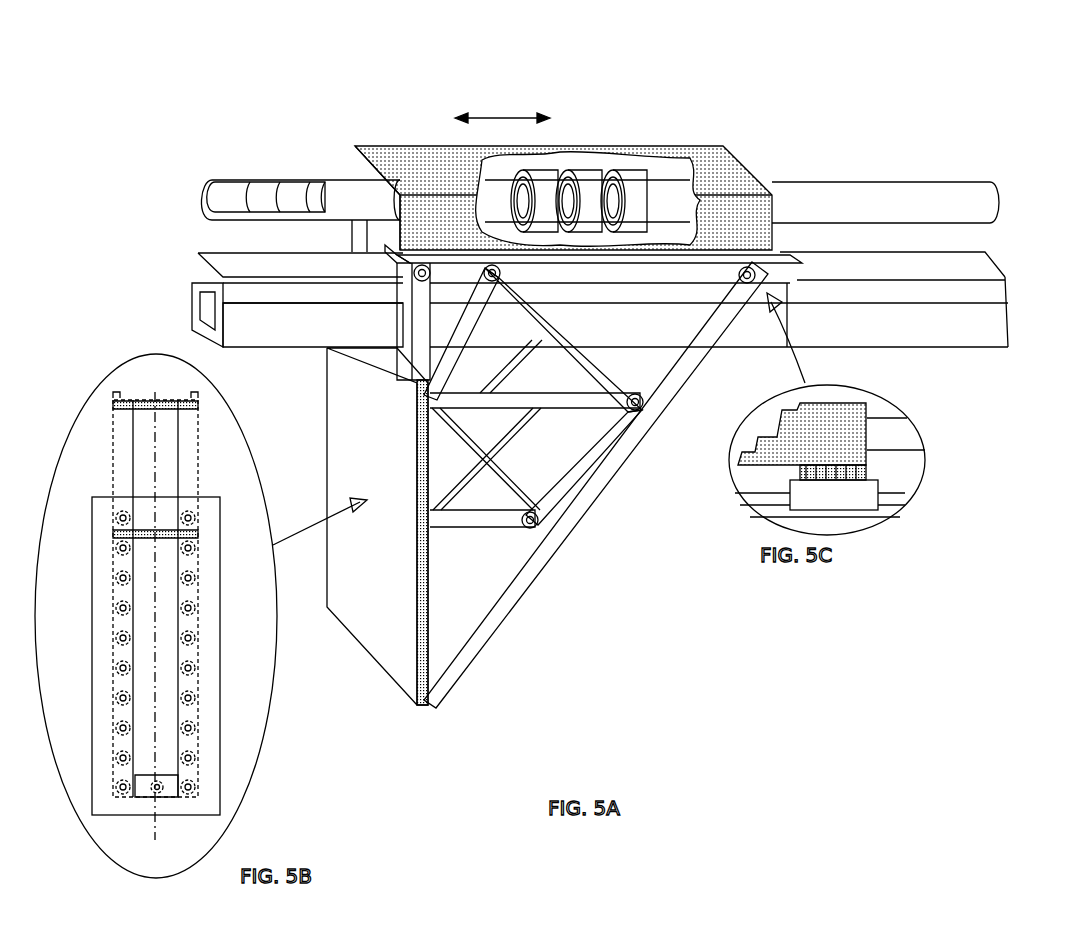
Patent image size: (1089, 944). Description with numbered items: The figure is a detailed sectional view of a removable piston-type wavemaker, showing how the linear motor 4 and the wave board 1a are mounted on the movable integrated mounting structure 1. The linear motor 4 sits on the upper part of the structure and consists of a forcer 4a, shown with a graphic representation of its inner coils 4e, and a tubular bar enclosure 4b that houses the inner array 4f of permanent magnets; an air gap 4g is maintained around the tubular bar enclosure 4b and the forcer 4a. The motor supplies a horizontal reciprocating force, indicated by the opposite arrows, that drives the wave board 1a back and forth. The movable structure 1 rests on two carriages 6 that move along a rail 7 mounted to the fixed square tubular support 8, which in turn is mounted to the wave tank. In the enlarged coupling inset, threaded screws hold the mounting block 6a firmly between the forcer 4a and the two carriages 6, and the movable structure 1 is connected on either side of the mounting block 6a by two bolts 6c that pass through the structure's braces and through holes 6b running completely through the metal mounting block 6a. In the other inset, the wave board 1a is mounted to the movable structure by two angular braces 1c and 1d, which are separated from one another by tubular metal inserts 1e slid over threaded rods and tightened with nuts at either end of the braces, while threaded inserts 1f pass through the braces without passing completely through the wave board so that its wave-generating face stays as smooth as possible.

In FIG. 5A, the movable integrated mounting structure 1 is at (582, 490).
In FIG. 5A, the wave board 1a is at (372, 620).
In FIG. 5B, the angular brace 1c is at (120, 466).
In FIG. 5B, the angular brace 1d is at (190, 466).
In FIG. 5B, the tubular metal inserts 1e is at (190, 410).
In FIG. 5B, the threaded inserts 1f is at (118, 518).
In FIG. 5A, the linear motor 4 is at (678, 117).
In FIG. 5A, the forcer 4a is at (442, 190).
In FIG. 5C, the forcer 4a is at (845, 428).
In FIG. 5A, the tubular bar enclosure 4b is at (343, 190).
In FIG. 5A, the inner coils 4e is at (550, 192).
In FIG. 5A, the inner array of permanent magnets 4f is at (284, 182).
In FIG. 5A, the air gap 4g is at (386, 196).
In FIG. 5A, the carriages 6 is at (527, 290).
In FIG. 5C, the carriages 6 is at (835, 495).
In FIG. 5C, the mounting block 6a is at (868, 478).
In FIG. 5C, the holes 6b is at (830, 470).
In FIG. 5A, the bolts 6c is at (488, 282).
In FIG. 5A, the rail 7 is at (208, 276).
In FIG. 5A, the fixed square tubular support 8 is at (192, 300).